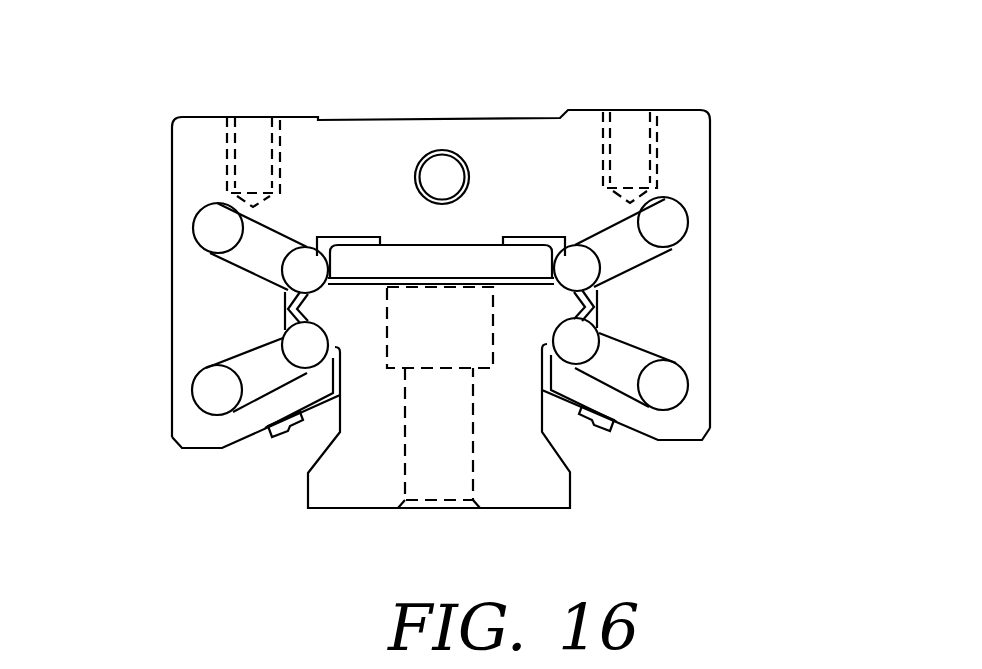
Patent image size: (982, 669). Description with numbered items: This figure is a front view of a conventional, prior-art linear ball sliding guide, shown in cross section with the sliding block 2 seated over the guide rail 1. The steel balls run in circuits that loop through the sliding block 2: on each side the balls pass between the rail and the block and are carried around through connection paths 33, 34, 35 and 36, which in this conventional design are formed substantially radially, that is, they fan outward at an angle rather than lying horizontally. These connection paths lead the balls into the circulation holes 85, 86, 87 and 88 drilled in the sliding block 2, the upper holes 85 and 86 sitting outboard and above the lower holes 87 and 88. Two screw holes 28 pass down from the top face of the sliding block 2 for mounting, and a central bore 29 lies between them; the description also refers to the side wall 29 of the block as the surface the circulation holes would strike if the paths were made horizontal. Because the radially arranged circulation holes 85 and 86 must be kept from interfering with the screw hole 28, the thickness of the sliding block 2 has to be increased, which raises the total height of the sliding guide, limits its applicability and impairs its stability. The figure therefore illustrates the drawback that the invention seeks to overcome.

The rail / base 1 is at (530, 490).
The sliding block 2 is at (362, 135).
The screw hole 28 is at (253, 127).
The side wall 29 is at (448, 168).
The connection path 33 is at (627, 263).
The connection path 34 is at (247, 262).
The connection path 35 is at (627, 348).
The connection path 36 is at (250, 360).
The circulation hole 85 is at (680, 200).
The circulation hole 86 is at (197, 225).
The circulation hole 87 is at (685, 397).
The circulation hole 88 is at (192, 395).